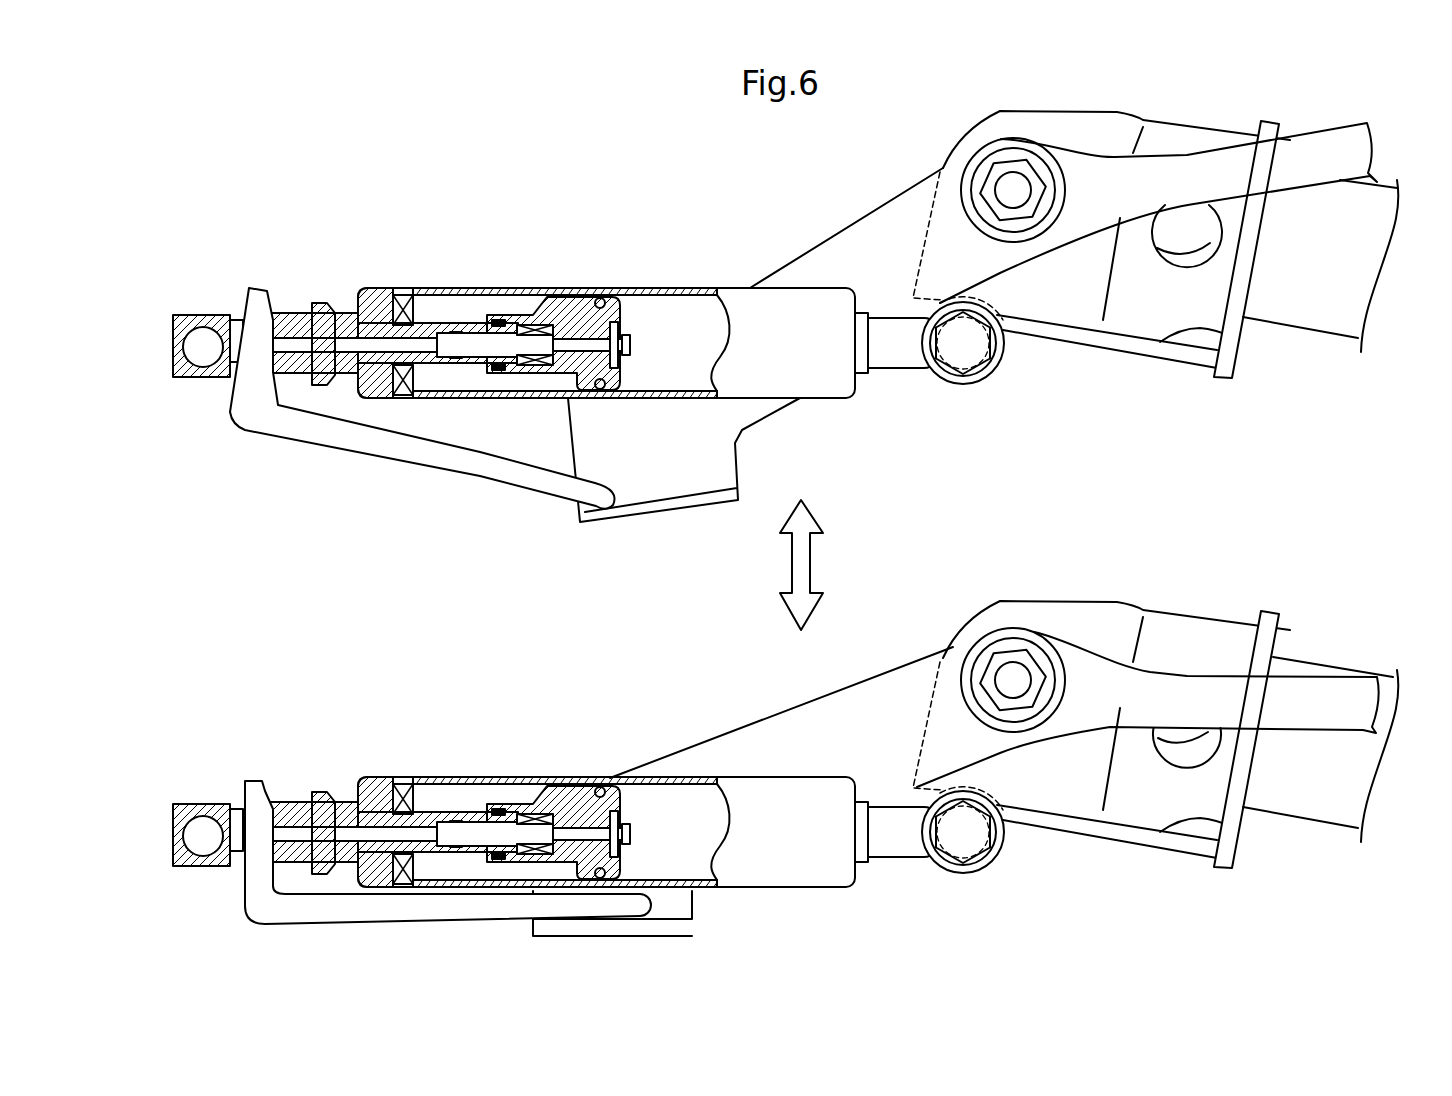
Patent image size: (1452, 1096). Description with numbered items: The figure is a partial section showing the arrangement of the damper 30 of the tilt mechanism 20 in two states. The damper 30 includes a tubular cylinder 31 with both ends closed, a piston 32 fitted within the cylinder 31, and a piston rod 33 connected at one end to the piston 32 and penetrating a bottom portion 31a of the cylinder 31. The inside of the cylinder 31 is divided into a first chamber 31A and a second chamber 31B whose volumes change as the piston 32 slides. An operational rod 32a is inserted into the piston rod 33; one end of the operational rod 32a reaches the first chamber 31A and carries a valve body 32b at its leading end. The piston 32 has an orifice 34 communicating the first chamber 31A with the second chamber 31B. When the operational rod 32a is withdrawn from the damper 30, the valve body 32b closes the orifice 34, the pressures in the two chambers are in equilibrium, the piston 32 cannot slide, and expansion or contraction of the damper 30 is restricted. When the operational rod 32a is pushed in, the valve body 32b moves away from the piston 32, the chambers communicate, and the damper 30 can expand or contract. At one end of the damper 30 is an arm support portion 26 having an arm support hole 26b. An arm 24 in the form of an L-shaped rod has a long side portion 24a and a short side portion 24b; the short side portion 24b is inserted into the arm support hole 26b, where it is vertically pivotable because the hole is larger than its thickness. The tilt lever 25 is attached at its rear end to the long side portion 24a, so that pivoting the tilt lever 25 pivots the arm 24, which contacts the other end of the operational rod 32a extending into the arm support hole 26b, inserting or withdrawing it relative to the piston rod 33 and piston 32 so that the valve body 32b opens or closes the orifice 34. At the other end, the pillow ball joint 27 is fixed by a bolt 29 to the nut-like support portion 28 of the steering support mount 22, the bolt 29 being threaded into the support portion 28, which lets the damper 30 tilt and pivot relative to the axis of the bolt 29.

The tilt mechanism 20 is at (621, 542).
The steering support mount 22 is at (1182, 313).
The arm 24 is at (391, 573).
The long side portion 24a is at (443, 460).
The short side portion 24b is at (250, 789).
The tilt lever 25 is at (1318, 148).
The arm support portion 26 is at (198, 315).
The arm support hole 26b is at (242, 360).
The pillow ball joint 27 is at (895, 358).
The support portion 28 is at (1008, 349).
The bolt 29 is at (972, 372).
The damper 30 is at (697, 279).
The cylinder 31 is at (822, 398).
The first chamber 31A is at (667, 370).
The second chamber 31B is at (474, 376).
The bottom portion 31a is at (403, 392).
The piston 32 is at (594, 298).
The operational rod 32a is at (425, 350).
The valve body 32b is at (610, 320).
The piston rod 33 is at (345, 313).
The orifice 34 is at (600, 337).